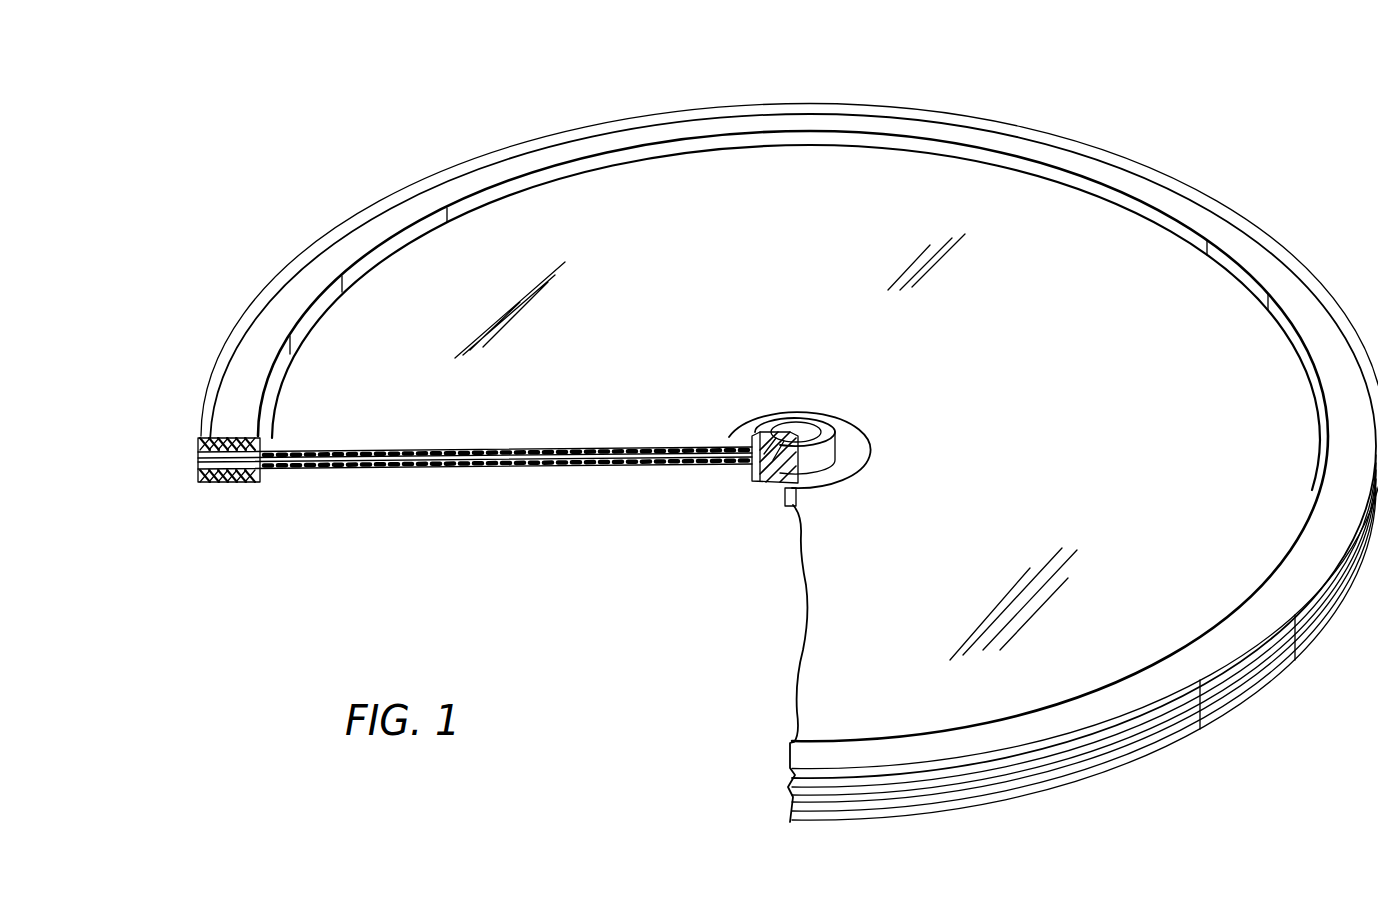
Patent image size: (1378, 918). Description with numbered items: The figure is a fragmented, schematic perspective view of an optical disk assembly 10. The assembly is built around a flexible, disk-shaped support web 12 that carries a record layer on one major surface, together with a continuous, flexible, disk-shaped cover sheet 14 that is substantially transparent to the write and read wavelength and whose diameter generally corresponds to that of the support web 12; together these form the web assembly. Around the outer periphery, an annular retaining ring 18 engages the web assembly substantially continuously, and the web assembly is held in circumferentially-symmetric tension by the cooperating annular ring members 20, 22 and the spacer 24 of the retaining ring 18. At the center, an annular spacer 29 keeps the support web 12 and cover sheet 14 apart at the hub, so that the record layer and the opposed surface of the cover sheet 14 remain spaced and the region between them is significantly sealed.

The optical disk assembly 10 is at (786, 441).
The support web 12 is at (602, 470).
The cover sheet 14 is at (436, 452).
The retaining ring 18 is at (818, 476).
The annular ring member 20 is at (243, 355).
The annular ring member 22 is at (233, 478).
The spacer 24 is at (320, 458).
The annular spacer 29 is at (714, 458).